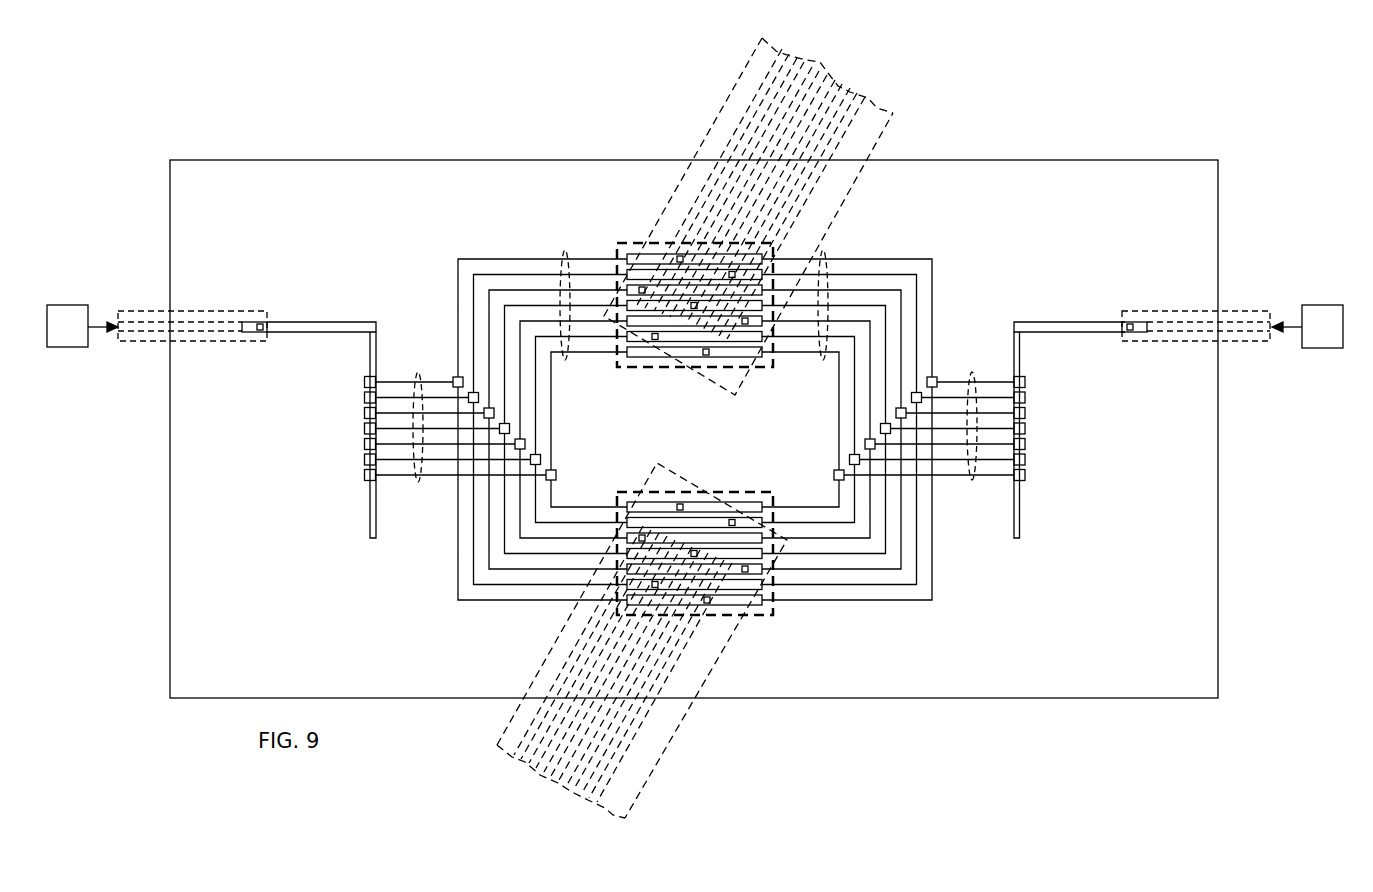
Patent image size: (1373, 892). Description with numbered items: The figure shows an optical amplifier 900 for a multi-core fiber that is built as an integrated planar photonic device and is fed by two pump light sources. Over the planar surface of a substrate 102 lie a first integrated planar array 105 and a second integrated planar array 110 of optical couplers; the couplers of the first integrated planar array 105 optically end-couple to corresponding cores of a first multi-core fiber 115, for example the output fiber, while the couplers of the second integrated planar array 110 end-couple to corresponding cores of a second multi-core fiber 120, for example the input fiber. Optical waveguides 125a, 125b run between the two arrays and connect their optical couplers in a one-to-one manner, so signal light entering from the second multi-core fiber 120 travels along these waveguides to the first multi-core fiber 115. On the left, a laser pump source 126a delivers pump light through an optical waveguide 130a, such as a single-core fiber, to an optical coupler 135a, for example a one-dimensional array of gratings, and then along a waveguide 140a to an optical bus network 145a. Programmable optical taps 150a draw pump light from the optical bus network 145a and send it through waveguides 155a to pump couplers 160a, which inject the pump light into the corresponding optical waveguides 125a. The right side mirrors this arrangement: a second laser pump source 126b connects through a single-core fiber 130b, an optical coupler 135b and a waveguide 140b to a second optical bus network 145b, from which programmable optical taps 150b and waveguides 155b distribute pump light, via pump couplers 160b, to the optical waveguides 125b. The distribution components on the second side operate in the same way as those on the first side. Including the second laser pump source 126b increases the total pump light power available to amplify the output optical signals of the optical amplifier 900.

The optical amplifier 900 is at (450, 102).
The substrate 102 is at (1162, 648).
The first integrated planar array 105 is at (639, 380).
The second integrated planar array 110 is at (751, 481).
The first multi-core fiber 115 is at (710, 128).
The second multi-core fiber 120 is at (677, 730).
The optical waveguides 125a is at (565, 250).
The optical waveguides 125b is at (823, 362).
The laser pump source 126a is at (67, 305).
The second laser pump source 126b is at (1322, 305).
The optical waveguide 130a is at (215, 341).
The SCF 130b is at (1178, 341).
The optical coupler 135a is at (250, 322).
The optical coupler 135b is at (1135, 322).
The waveguide 140a is at (327, 318).
The waveguide 140b is at (1064, 318).
The optical bus network 145a is at (370, 512).
The optical bus network 145b is at (1020, 512).
The programmable optical taps 150a is at (364, 385).
The programmable optical taps 150b is at (1026, 385).
The waveguides 155a is at (418, 484).
The waveguides 155b is at (972, 482).
The pump couplers 160a is at (455, 377).
The pump couplers 160b is at (935, 377).